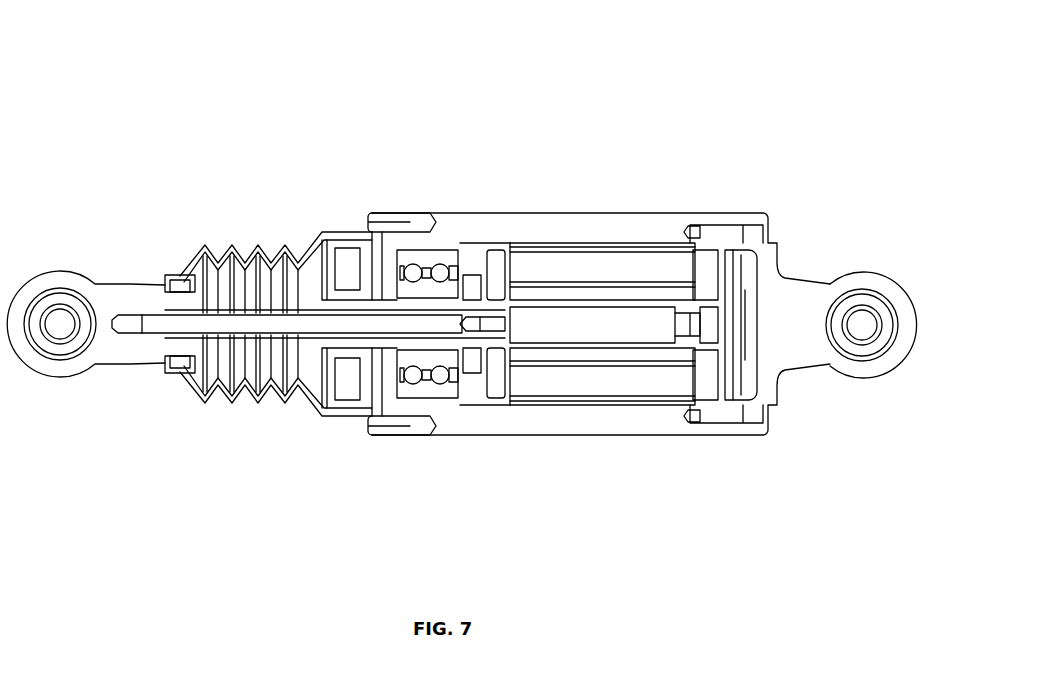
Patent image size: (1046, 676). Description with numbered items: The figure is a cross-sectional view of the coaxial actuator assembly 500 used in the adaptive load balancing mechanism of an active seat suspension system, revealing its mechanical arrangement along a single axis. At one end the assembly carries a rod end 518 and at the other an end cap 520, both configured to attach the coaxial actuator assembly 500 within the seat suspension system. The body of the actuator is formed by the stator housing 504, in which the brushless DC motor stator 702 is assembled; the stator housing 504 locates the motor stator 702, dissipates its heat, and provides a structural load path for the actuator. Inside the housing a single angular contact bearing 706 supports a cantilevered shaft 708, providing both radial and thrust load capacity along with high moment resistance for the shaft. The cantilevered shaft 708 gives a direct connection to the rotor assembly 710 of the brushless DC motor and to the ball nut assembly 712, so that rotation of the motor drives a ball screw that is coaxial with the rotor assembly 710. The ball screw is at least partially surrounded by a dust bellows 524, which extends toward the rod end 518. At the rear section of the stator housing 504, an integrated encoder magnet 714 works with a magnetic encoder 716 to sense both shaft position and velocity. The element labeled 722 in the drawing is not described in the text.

The coaxial actuator assembly 500 is at (253, 90).
The stator housing 504 is at (476, 213).
The rod end 518 is at (60, 272).
The end cap 520 is at (860, 270).
The dust bellows 524 is at (240, 257).
The brushless DC motor stator 702 is at (548, 243).
The angular contact bearing 706 is at (427, 393).
The cantilevered shaft 708 is at (497, 347).
The rotor assembly 710 is at (607, 352).
The ball nut assembly 712 is at (318, 392).
The integrated encoder magnet 714 is at (693, 323).
The magnetic encoder 716 is at (742, 355).
The piston rod 722 is at (243, 323).